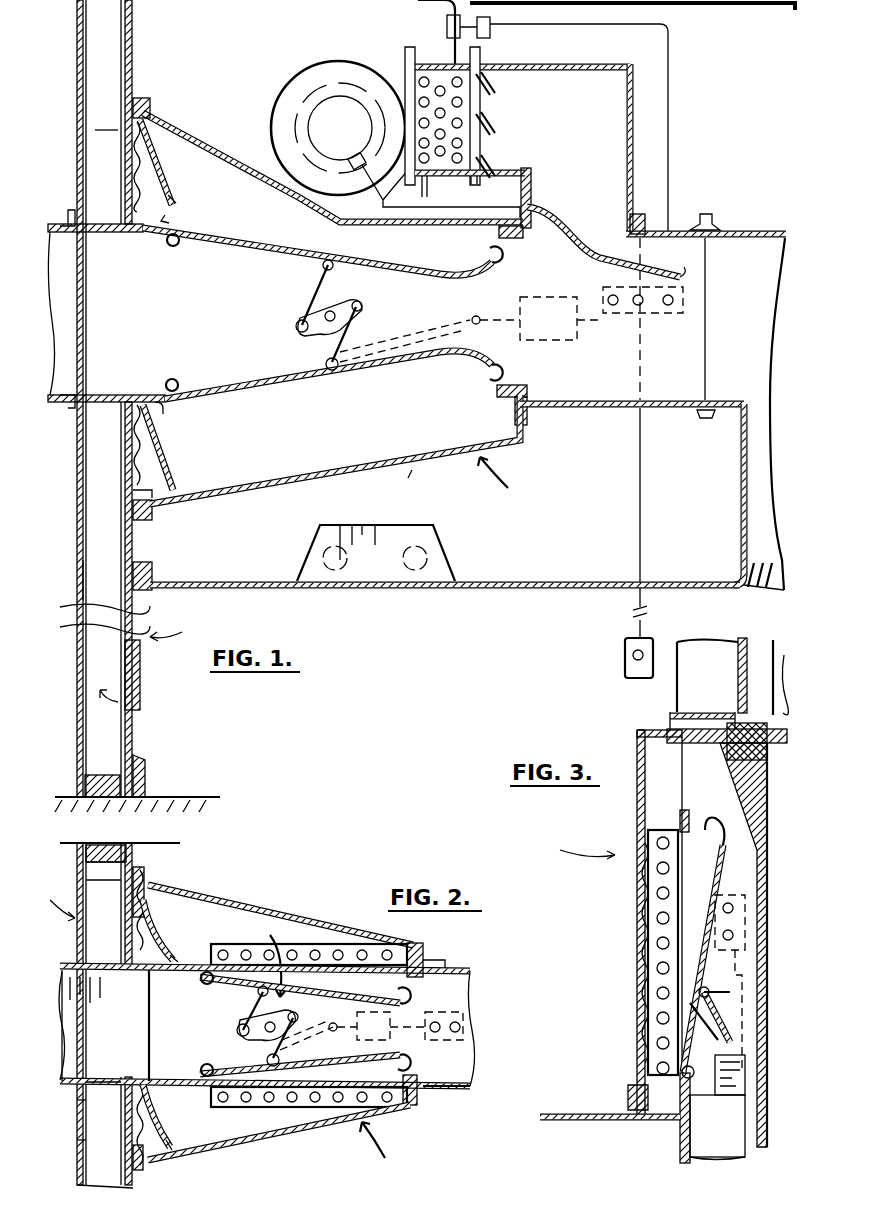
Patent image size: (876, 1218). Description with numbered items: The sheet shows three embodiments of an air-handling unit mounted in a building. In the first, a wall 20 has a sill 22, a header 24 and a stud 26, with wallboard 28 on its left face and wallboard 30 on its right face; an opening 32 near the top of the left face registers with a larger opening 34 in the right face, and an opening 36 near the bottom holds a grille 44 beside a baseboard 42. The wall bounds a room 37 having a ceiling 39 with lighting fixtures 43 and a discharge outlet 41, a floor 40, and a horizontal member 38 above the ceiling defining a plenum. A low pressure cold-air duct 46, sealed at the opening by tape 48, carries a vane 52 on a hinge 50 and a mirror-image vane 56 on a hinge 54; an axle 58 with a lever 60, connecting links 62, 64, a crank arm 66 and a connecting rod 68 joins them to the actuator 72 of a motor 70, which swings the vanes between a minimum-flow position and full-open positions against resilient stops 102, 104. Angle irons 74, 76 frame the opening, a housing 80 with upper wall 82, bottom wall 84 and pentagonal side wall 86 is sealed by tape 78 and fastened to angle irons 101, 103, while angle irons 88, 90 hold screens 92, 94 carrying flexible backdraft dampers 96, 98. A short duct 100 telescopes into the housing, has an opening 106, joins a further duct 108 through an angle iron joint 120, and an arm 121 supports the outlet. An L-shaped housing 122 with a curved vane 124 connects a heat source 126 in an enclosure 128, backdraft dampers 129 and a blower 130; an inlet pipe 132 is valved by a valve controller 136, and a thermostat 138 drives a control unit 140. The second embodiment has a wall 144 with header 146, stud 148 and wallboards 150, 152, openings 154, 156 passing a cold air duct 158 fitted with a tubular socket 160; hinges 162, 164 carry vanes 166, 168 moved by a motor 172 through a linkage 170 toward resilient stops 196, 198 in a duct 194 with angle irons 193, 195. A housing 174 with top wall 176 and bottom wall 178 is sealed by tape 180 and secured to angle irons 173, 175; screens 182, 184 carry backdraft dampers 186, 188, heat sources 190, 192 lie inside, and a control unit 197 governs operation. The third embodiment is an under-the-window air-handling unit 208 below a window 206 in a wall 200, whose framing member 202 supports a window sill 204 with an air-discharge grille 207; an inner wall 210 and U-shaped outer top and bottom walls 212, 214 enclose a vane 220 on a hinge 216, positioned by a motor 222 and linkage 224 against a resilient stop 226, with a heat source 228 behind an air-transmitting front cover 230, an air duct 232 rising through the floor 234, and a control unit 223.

In FIG. 1, the wall 20 is at (175, 625).
In FIG. 1, the sill 22 is at (95, 765).
In FIG. 1, the header 24 is at (77, 27).
In FIG. 1, the stud 26 is at (130, 36).
In FIG. 1, the wallboard 28 is at (77, 576).
In FIG. 1, the wallboard 30 is at (140, 606).
In FIG. 1, the opening 32 is at (82, 395).
In FIG. 1, the opening 34 is at (108, 132).
In FIG. 1, the opening 36 is at (120, 680).
In FIG. 1, the room 37 is at (406, 670).
In FIG. 1, the horizontal member 38 is at (708, 8).
In FIG. 1, the ceiling 39 is at (515, 590).
In FIG. 1, the floor 40 is at (190, 795).
In FIG. 1, the discharge outlet 41 is at (752, 592).
In FIG. 1, the baseboard 42 is at (145, 778).
In FIG. 1, the lighting fixtures 43 is at (360, 588).
In FIG. 1, the grille 44 is at (140, 695).
In FIG. 1, the cold-air duct 46 is at (94, 306).
In FIG. 1, the tape 48 is at (68, 210).
In FIG. 1, the hinge 50 is at (172, 248).
In FIG. 1, the vane 52 is at (240, 242).
In FIG. 1, the hinge 54 is at (175, 380).
In FIG. 1, the vane 56 is at (232, 388).
In FIG. 1, the axle 58 is at (348, 304).
In FIG. 1, the lever 60 is at (320, 355).
In FIG. 1, the connecting link 62 is at (305, 290).
In FIG. 1, the connecting link 64 is at (370, 323).
In FIG. 1, the crank arm 66 is at (366, 335).
In FIG. 1, the connecting rod 68 is at (442, 318).
In FIG. 1, the actuating motor 70 is at (545, 342).
In FIG. 1, the actuator 72 is at (490, 318).
In FIG. 1, the angle iron 74 is at (160, 135).
In FIG. 1, the angle iron 76 is at (135, 500).
In FIG. 1, the tape 78 is at (145, 105).
In FIG. 1, the housing 80 is at (506, 480).
In FIG. 1, the upper wall 82 is at (225, 155).
In FIG. 1, the bottom wall 84 is at (320, 475).
In FIG. 1, the side wall 86 is at (408, 478).
In FIG. 1, the angle iron 88 is at (150, 222).
In FIG. 1, the angle iron 90 is at (165, 405).
In FIG. 1, the screen 92 is at (135, 150).
In FIG. 1, the screen 94 is at (133, 455).
In FIG. 1, the backdraft damper 96 is at (172, 186).
In FIG. 1, the backdraft damper 98 is at (170, 470).
In FIG. 1, the short duct 100 is at (585, 408).
In FIG. 1, the angle iron 101 is at (520, 205).
In FIG. 1, the resilient stop 102 is at (488, 253).
In FIG. 1, the angle iron 103 is at (500, 422).
In FIG. 1, the resilient stop 104 is at (495, 390).
In FIG. 1, the opening 106 is at (630, 228).
In FIG. 1, the duct 108 is at (760, 230).
In FIG. 1, the angle iron joint 120 is at (705, 214).
In FIG. 1, the arm 121 is at (740, 492).
In FIG. 1, the L-shaped housing 122 is at (638, 90).
In FIG. 1, the curved vane 124 is at (568, 258).
In FIG. 1, the heat source 126 is at (410, 85).
In FIG. 1, the enclosure 128 is at (440, 183).
In FIG. 1, the backdraft dampers 129 is at (494, 100).
In FIG. 1, the blower 130 is at (305, 80).
In FIG. 1, the inlet pipe 132 is at (420, 6).
In FIG. 1, the valve controller 136 is at (492, 30).
In FIG. 1, the thermostat 138 is at (622, 660).
In FIG. 1, the control unit 140 is at (650, 316).
In FIG. 2, the wall 144 is at (104, 1014).
In FIG. 2, the header 146 is at (120, 848).
In FIG. 2, the stud 148 is at (80, 1140).
In FIG. 2, the wallboard 150 is at (77, 1106).
In FIG. 2, the wallboard 152 is at (140, 855).
In FIG. 2, the opening 154 is at (110, 1055).
In FIG. 2, the opening 156 is at (130, 980).
In FIG. 2, the cold air duct 158 is at (62, 978).
In FIG. 2, the tubular socket 160 is at (160, 985).
In FIG. 2, the hinge 162 is at (208, 986).
In FIG. 2, the hinge 164 is at (203, 1068).
In FIG. 2, the vane 166 is at (345, 992).
In FIG. 2, the vane 168 is at (332, 1066).
In FIG. 2, the linkage 170 is at (264, 955).
In FIG. 2, the motor 172 is at (455, 1000).
In FIG. 2, the angle iron 173 is at (125, 900).
In FIG. 2, the housing 174 is at (387, 1146).
In FIG. 2, the angle iron 175 is at (168, 1145).
In FIG. 2, the top wall 176 is at (265, 893).
In FIG. 2, the bottom wall 178 is at (300, 1132).
In FIG. 2, the tape 180 is at (145, 880).
In FIG. 2, the screen 182 is at (170, 932).
In FIG. 2, the screen 184 is at (125, 1122).
In FIG. 2, the backdraft damper 186 is at (166, 960).
In FIG. 2, the backdraft damper 188 is at (172, 1120).
In FIG. 2, the heat source 190 is at (330, 944).
In FIG. 2, the heat source 192 is at (390, 1108).
In FIG. 2, the angle iron 193 is at (432, 960).
In FIG. 2, the duct 194 is at (472, 968).
In FIG. 2, the angle iron 195 is at (420, 1097).
In FIG. 2, the resilient stop 196 is at (447, 962).
In FIG. 2, the control unit 197 is at (466, 1030).
In FIG. 2, the resilient stop 198 is at (470, 1082).
In FIG. 3, the wall 200 is at (766, 800).
In FIG. 3, the framing member 202 is at (703, 708).
In FIG. 3, the window sill 204 is at (773, 665).
In FIG. 3, the window 206 is at (738, 645).
In FIG. 3, the air-discharge grille 207 is at (670, 718).
In FIG. 3, the under-the-window air-handling unit 208 is at (578, 843).
In FIG. 3, the inner wall 210 is at (768, 868).
In FIG. 3, the U-shaped outer top wall 212 is at (637, 745).
In FIG. 3, the U-shaped outer bottom wall 214 is at (628, 1096).
In FIG. 3, the hinge 216 is at (717, 1106).
In FIG. 3, the vane 220 is at (718, 858).
In FIG. 3, the motor 222 is at (713, 1137).
In FIG. 3, the control unit 223 is at (748, 935).
In FIG. 3, the linkage 224 is at (730, 1012).
In FIG. 3, the resilient stop 226 is at (686, 808).
In FIG. 3, the heat source 228 is at (648, 914).
In FIG. 3, the air-transmitting front cover 230 is at (642, 962).
In FIG. 3, the air duct 232 is at (680, 1155).
In FIG. 3, the floor 234 is at (580, 1122).